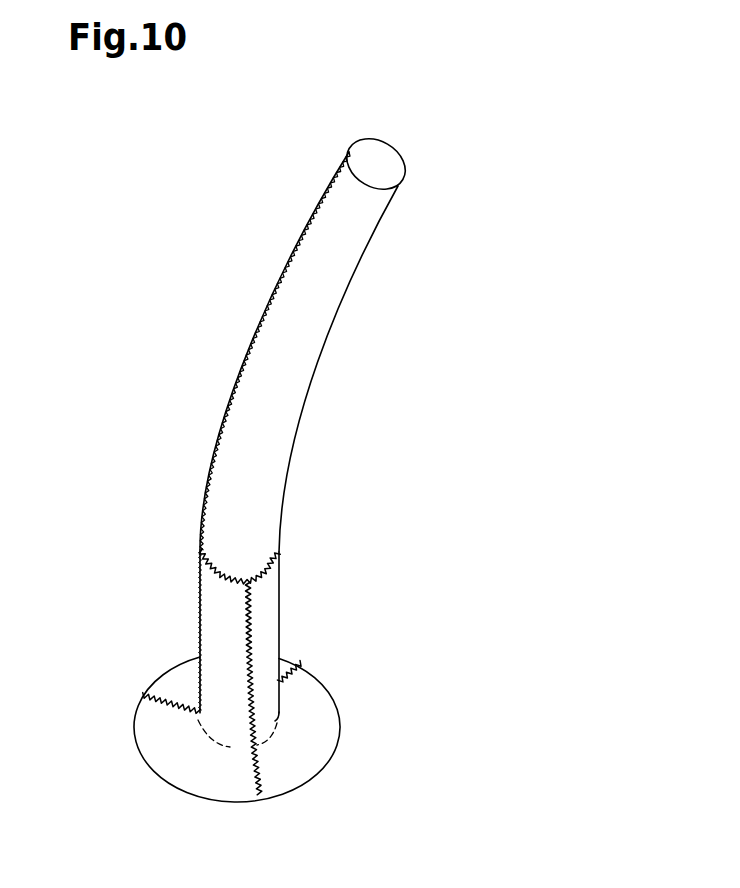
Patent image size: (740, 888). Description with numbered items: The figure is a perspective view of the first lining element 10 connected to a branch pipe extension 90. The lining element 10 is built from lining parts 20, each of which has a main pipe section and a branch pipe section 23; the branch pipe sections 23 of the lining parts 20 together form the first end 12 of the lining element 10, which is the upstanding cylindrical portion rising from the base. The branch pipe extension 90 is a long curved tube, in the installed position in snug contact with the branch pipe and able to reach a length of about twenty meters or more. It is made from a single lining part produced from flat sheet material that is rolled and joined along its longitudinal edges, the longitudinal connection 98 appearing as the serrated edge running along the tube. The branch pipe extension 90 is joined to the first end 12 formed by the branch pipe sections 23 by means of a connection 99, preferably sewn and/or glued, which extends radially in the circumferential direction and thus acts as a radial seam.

The lining element 10 is at (360, 668).
The first end 12 is at (285, 579).
The lining part 20 is at (167, 662).
The branch pipe section 23 is at (220, 625).
The branch pipe extension 90 is at (188, 373).
The connection 98 is at (298, 229).
The connection 99 is at (232, 566).